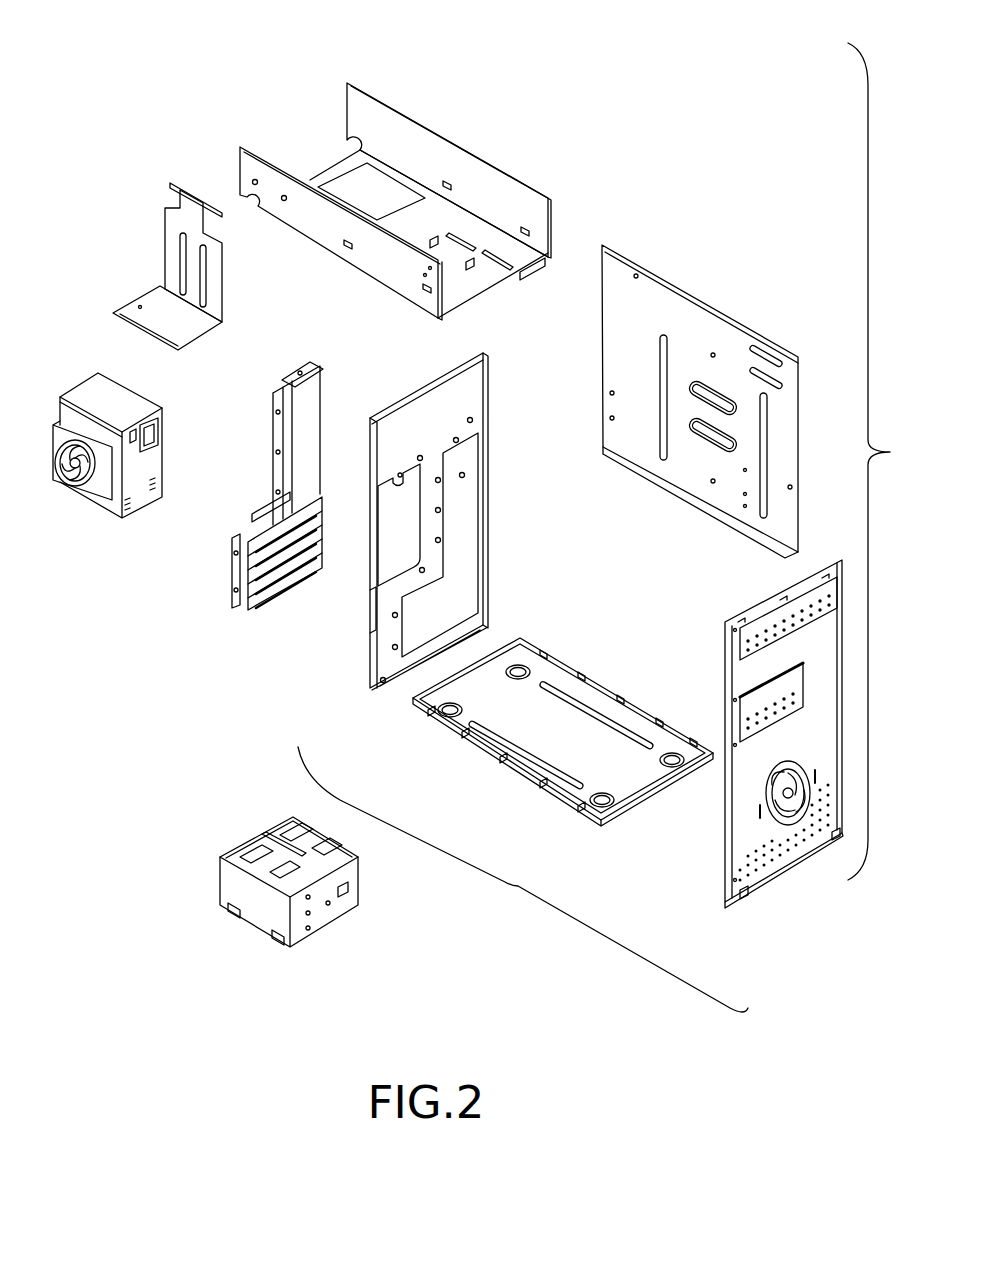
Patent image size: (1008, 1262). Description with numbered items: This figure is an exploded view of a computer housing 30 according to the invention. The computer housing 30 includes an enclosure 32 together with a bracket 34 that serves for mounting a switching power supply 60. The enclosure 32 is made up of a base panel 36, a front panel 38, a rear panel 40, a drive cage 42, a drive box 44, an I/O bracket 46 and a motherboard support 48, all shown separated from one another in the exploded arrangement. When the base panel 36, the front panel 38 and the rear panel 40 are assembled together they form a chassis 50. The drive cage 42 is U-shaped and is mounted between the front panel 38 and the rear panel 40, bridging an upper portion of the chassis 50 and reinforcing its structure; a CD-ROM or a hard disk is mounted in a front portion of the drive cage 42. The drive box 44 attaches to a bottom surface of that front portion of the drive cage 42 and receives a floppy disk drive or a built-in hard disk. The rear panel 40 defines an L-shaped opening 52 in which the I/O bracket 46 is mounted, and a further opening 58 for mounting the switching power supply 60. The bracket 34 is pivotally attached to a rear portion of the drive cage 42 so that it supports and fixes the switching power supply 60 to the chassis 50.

The computer housing 30 is at (649, 36).
The enclosure 32 is at (885, 461).
The bracket 34 is at (162, 258).
The base panel 36 is at (525, 773).
The front panel 38 is at (800, 852).
The rear panel 40 is at (420, 653).
The drive cage 42 is at (487, 186).
The drive box 44 is at (343, 903).
The I/O bracket 46 is at (320, 577).
The motherboard support 48 is at (802, 439).
The chassis 50 is at (523, 879).
The L-shaped opening 52 is at (467, 581).
The opening 58 is at (393, 548).
The switching power supply 60 is at (100, 524).